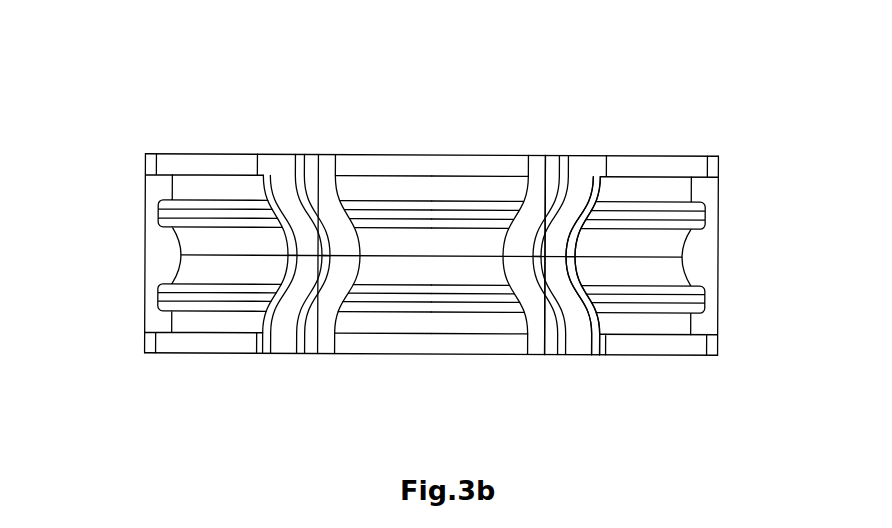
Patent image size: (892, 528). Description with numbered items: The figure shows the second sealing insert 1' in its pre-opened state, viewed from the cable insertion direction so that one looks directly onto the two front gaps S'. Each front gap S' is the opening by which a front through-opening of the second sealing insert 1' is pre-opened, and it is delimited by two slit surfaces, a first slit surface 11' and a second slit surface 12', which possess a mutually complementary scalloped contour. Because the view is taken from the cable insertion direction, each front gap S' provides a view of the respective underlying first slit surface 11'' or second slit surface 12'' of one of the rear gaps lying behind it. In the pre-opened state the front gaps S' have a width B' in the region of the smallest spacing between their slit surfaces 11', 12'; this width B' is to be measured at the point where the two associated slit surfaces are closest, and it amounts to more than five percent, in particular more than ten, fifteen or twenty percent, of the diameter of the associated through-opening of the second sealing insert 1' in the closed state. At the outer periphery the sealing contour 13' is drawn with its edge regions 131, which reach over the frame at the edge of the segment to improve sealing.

The second sealing insert 1' is at (416, 191).
The first slit surface 11' is at (411, 307).
The first slit surface of rear gap 11'' is at (304, 302).
The second slit surface 12' is at (598, 298).
The second slit surface of rear gap 12'' is at (459, 310).
The corrugated body section 13' is at (375, 254).
The edge regions 131 is at (695, 166).
The front gap S' is at (423, 285).
The width of the front gap B' is at (431, 134).